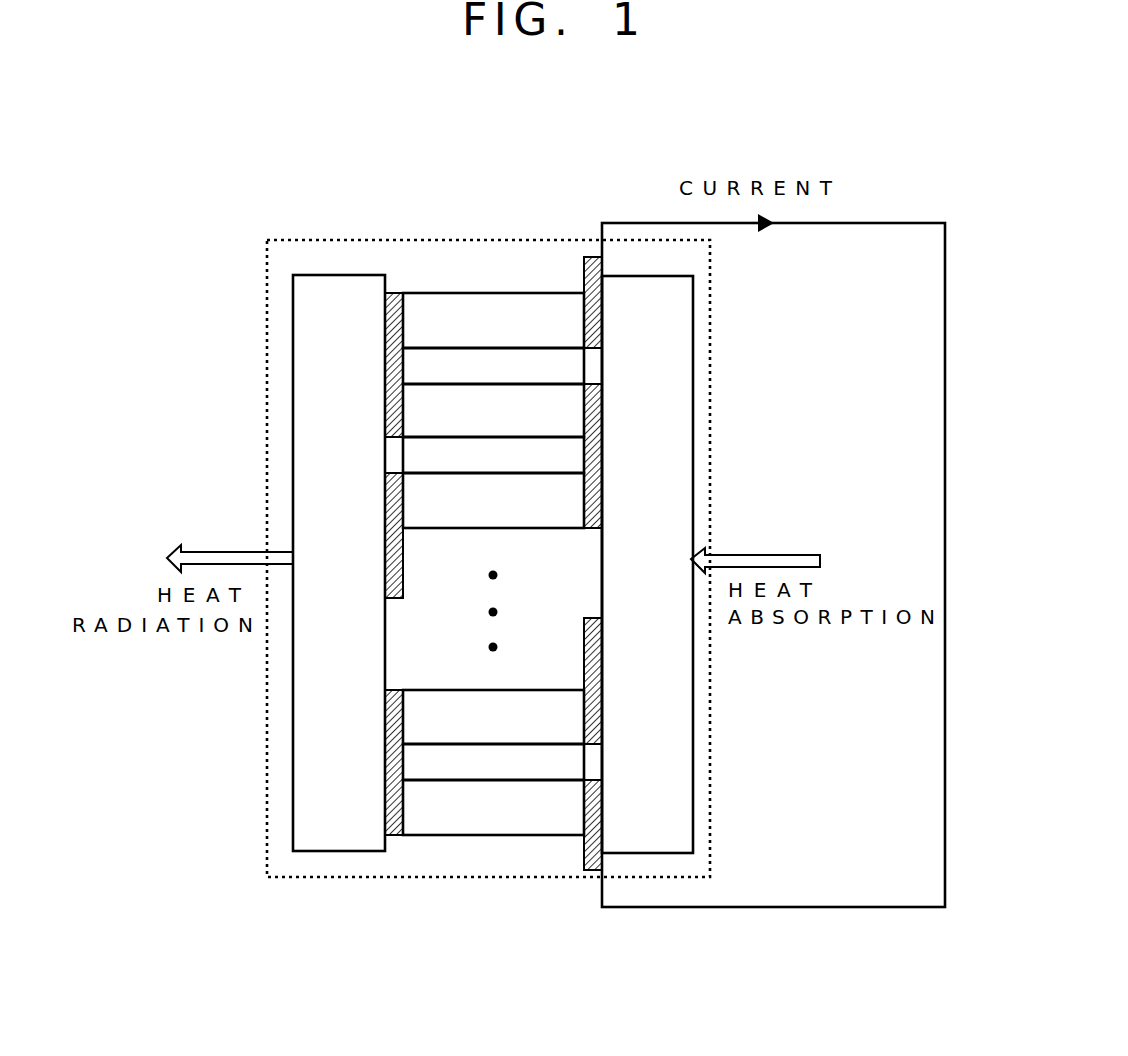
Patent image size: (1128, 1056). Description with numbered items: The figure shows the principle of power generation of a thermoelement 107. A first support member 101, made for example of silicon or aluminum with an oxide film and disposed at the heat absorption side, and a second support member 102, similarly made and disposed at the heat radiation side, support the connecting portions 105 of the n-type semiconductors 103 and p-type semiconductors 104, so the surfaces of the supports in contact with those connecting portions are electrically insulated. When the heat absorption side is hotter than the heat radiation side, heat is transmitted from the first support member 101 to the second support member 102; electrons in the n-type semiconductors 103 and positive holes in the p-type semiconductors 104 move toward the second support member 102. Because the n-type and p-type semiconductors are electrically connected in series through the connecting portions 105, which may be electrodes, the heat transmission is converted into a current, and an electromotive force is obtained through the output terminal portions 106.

The first support member 101 is at (692, 762).
The second support member 102 is at (293, 842).
The n-type semiconductor 103 is at (430, 293).
The p-type semiconductor 104 is at (557, 384).
The connecting portion 105 is at (385, 357).
The output terminal portion 106 is at (594, 257).
The thermoelectric module 107 is at (305, 238).